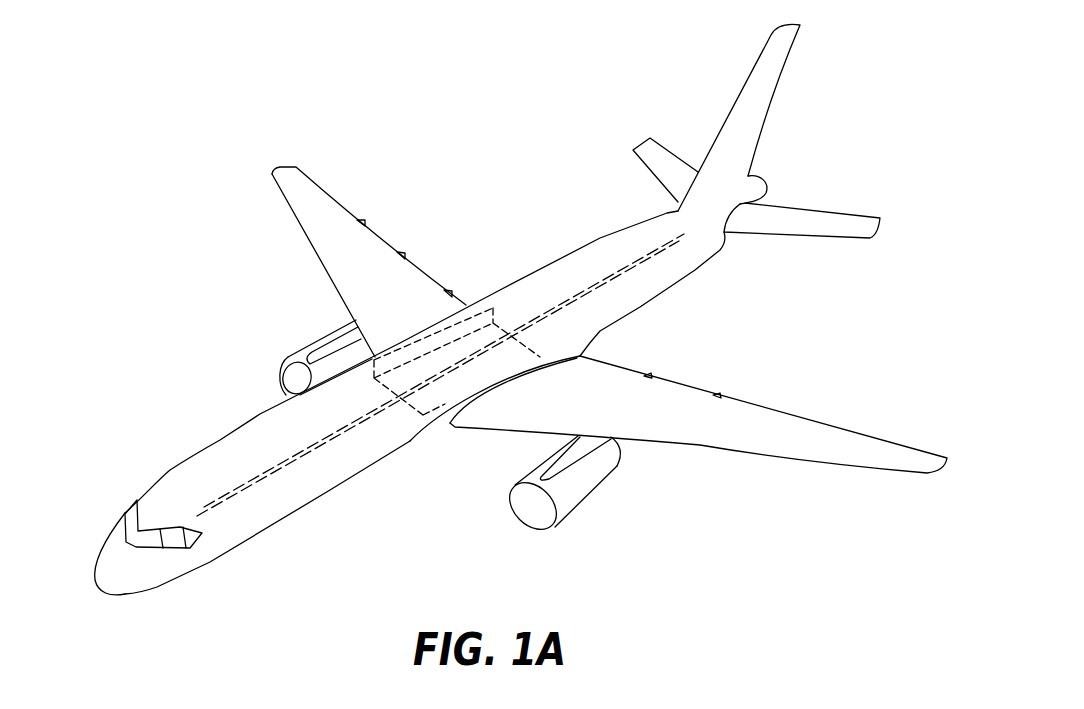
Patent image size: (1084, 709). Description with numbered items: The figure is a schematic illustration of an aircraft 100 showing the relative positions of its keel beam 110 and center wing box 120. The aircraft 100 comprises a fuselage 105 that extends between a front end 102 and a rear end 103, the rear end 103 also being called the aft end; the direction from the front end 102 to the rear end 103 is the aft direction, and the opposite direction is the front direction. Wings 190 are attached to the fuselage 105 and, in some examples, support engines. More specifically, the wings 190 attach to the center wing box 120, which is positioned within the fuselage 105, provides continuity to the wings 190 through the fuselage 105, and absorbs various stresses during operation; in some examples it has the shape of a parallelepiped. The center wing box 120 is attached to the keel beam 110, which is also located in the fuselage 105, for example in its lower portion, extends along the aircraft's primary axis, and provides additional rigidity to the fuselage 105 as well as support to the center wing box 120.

The aircraft 100 is at (497, 345).
The front end 102 is at (104, 591).
The rear end 103 is at (767, 175).
The fuselage 105 is at (188, 457).
The keel beam 110 is at (300, 460).
The center wing box 120 is at (490, 313).
The wings 190 is at (307, 200).